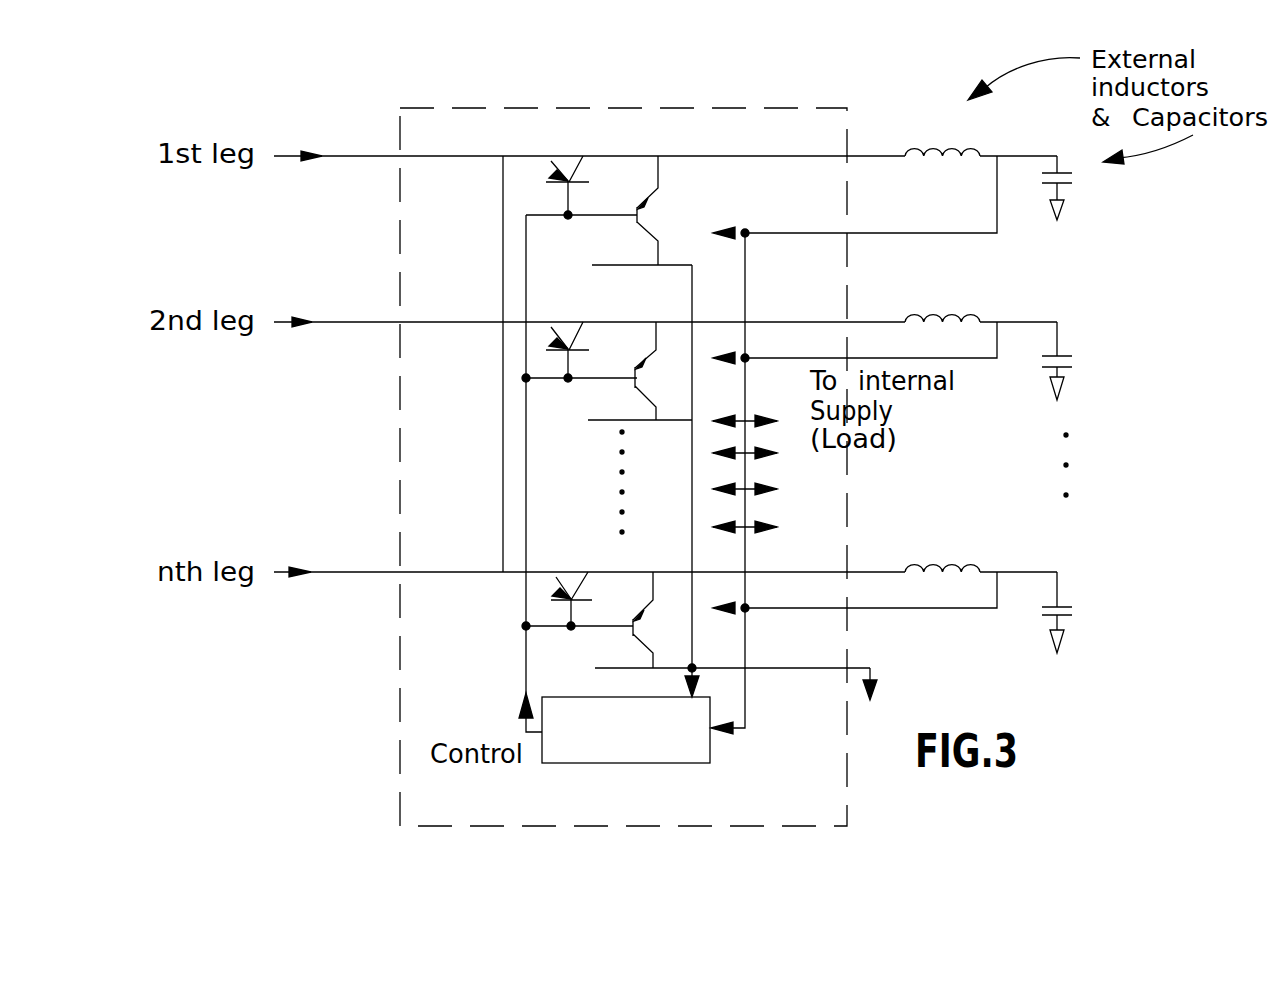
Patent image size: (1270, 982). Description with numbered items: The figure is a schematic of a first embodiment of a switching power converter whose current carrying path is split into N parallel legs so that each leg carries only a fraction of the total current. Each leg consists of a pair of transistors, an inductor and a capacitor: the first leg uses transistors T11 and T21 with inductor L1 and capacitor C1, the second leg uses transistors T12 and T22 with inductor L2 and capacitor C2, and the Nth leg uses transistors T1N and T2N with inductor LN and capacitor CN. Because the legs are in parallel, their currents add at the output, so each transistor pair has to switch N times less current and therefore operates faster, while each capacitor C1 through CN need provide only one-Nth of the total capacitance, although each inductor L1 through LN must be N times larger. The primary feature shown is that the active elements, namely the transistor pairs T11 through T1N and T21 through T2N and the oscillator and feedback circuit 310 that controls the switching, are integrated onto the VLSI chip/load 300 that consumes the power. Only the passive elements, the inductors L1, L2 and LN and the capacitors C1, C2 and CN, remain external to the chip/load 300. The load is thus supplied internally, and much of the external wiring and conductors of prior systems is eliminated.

The VLSI chip/load 300 is at (847, 812).
The oscillator and feedback circuit 310 is at (712, 762).
The transistor T11 is at (581, 167).
The transistor T21 is at (645, 412).
The transistor T12 is at (579, 333).
The transistor T22 is at (640, 371).
The transistor T1N is at (577, 581).
The transistor T2N is at (736, 636).
The inductor L1 is at (942, 127).
The inductor L2 is at (942, 295).
The inductor LN is at (942, 546).
The capacitor C1 is at (1081, 188).
The capacitor C2 is at (1082, 361).
The capacitor CN is at (1084, 612).